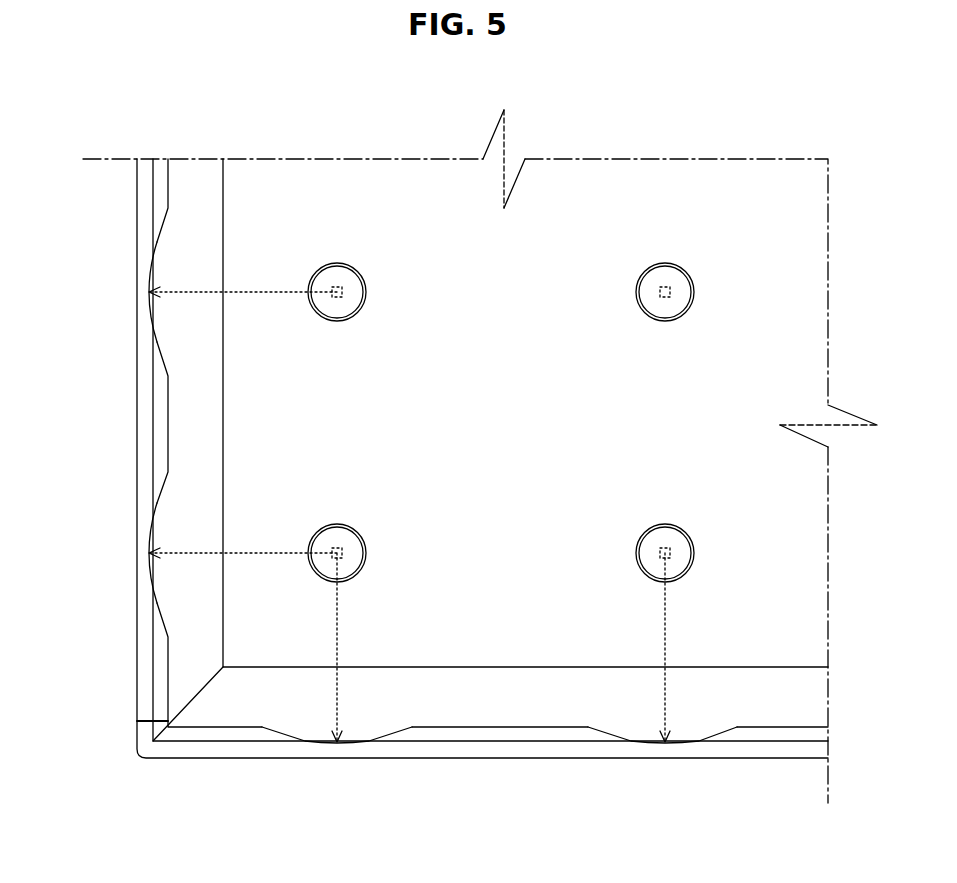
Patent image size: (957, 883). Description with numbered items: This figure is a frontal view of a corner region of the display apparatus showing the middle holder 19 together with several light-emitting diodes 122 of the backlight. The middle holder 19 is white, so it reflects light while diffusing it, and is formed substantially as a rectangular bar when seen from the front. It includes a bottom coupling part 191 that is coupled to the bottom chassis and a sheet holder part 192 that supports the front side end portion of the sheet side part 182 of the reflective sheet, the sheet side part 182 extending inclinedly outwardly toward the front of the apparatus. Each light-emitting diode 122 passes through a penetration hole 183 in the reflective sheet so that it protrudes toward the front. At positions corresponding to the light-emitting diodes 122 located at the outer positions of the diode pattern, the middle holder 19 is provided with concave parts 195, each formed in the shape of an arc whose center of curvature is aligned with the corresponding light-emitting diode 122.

The middle holder 19 is at (136, 302).
The bottom coupling part 191 is at (139, 404).
The sheet holder part 192 is at (158, 441).
The sheet side part 182 is at (170, 518).
The concave part 195 is at (157, 247).
The light-emitting diode 122 is at (340, 290).
The penetration hole 183 is at (358, 316).